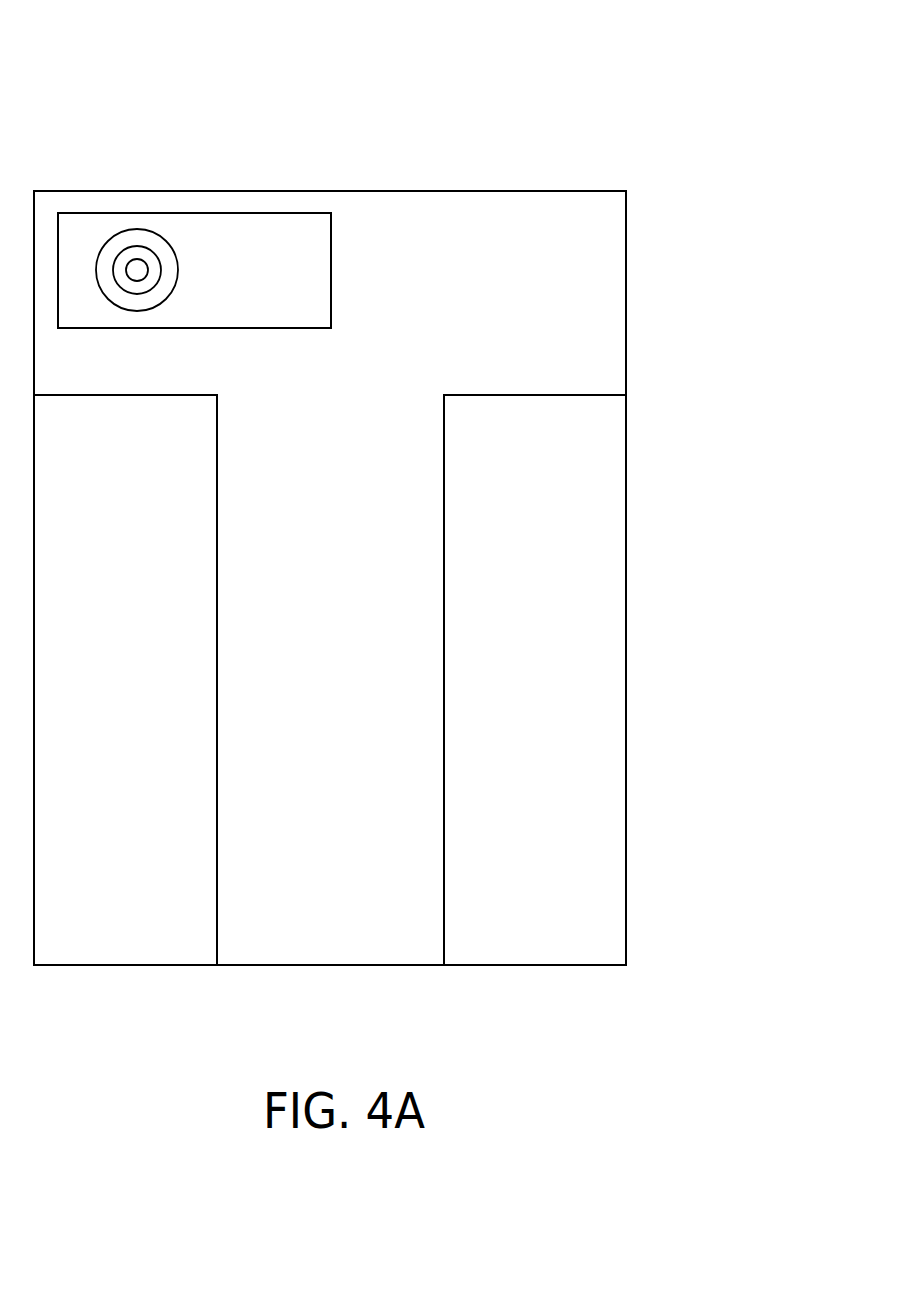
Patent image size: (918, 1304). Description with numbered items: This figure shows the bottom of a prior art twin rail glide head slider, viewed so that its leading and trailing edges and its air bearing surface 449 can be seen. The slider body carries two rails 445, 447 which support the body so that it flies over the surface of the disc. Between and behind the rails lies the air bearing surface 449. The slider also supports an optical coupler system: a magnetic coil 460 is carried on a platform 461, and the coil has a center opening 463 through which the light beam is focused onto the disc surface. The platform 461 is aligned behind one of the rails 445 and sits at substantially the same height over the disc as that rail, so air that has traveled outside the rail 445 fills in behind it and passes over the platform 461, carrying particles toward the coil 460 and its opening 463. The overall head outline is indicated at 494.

The housing / circuit board 494 is at (626, 345).
The platform 461 is at (275, 255).
The magnetic coil 460 is at (162, 250).
The center opening 463 is at (135, 266).
The rail 445 is at (88, 677).
The air bearing surface 449 is at (308, 601).
The rail 447 is at (515, 653).